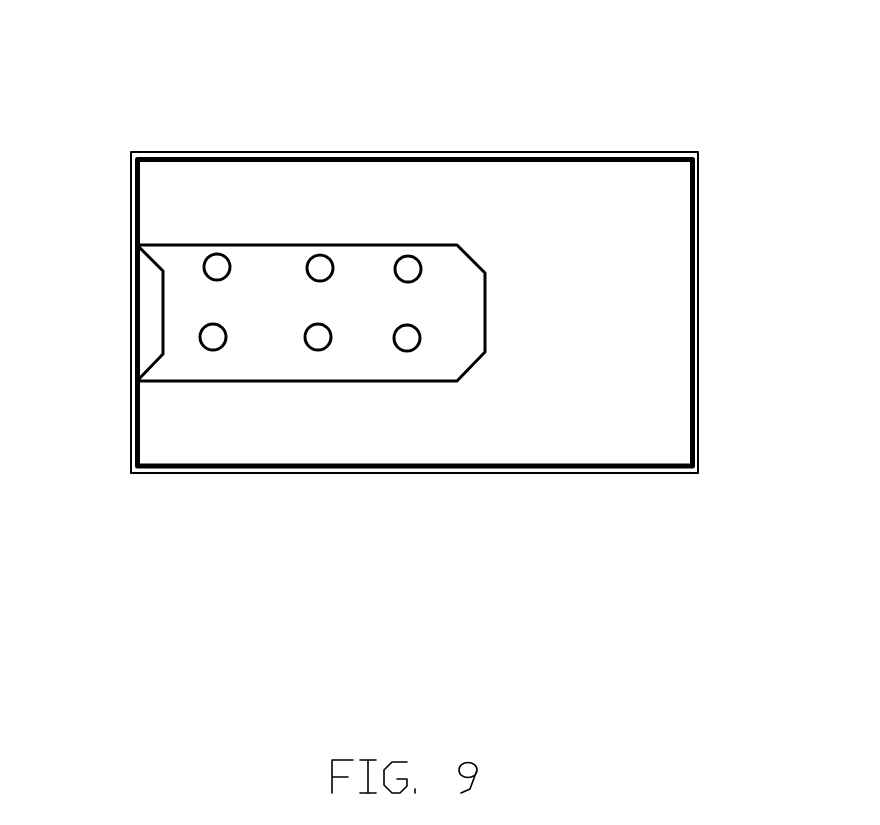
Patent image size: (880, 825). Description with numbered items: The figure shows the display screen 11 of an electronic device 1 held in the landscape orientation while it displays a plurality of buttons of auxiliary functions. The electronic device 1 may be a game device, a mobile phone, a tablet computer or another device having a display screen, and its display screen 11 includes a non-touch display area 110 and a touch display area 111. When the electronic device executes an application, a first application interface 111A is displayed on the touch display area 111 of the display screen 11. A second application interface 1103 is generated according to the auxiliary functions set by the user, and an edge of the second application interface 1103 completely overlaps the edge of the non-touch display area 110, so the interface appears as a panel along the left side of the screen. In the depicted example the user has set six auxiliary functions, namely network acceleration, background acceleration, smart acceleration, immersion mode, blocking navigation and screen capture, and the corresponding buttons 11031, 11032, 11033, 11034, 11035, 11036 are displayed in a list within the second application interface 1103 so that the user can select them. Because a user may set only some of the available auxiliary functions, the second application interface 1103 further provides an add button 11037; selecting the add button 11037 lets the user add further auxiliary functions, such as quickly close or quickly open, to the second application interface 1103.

The electronic device 1 is at (510, 78).
The display screen 11 is at (580, 158).
The touch display area 111 is at (673, 258).
The first application interface 111A is at (668, 422).
The non-touch display area 110 is at (147, 300).
The second application interface 1103 is at (270, 257).
The button of auxiliary function 11031 is at (217, 267).
The button of auxiliary function 11032 is at (320, 268).
The button of auxiliary function 11033 is at (418, 270).
The button of auxiliary function 11034 is at (208, 338).
The button of auxiliary function 11035 is at (313, 337).
The button of auxiliary function 11036 is at (407, 340).
The add button 11037 is at (475, 313).